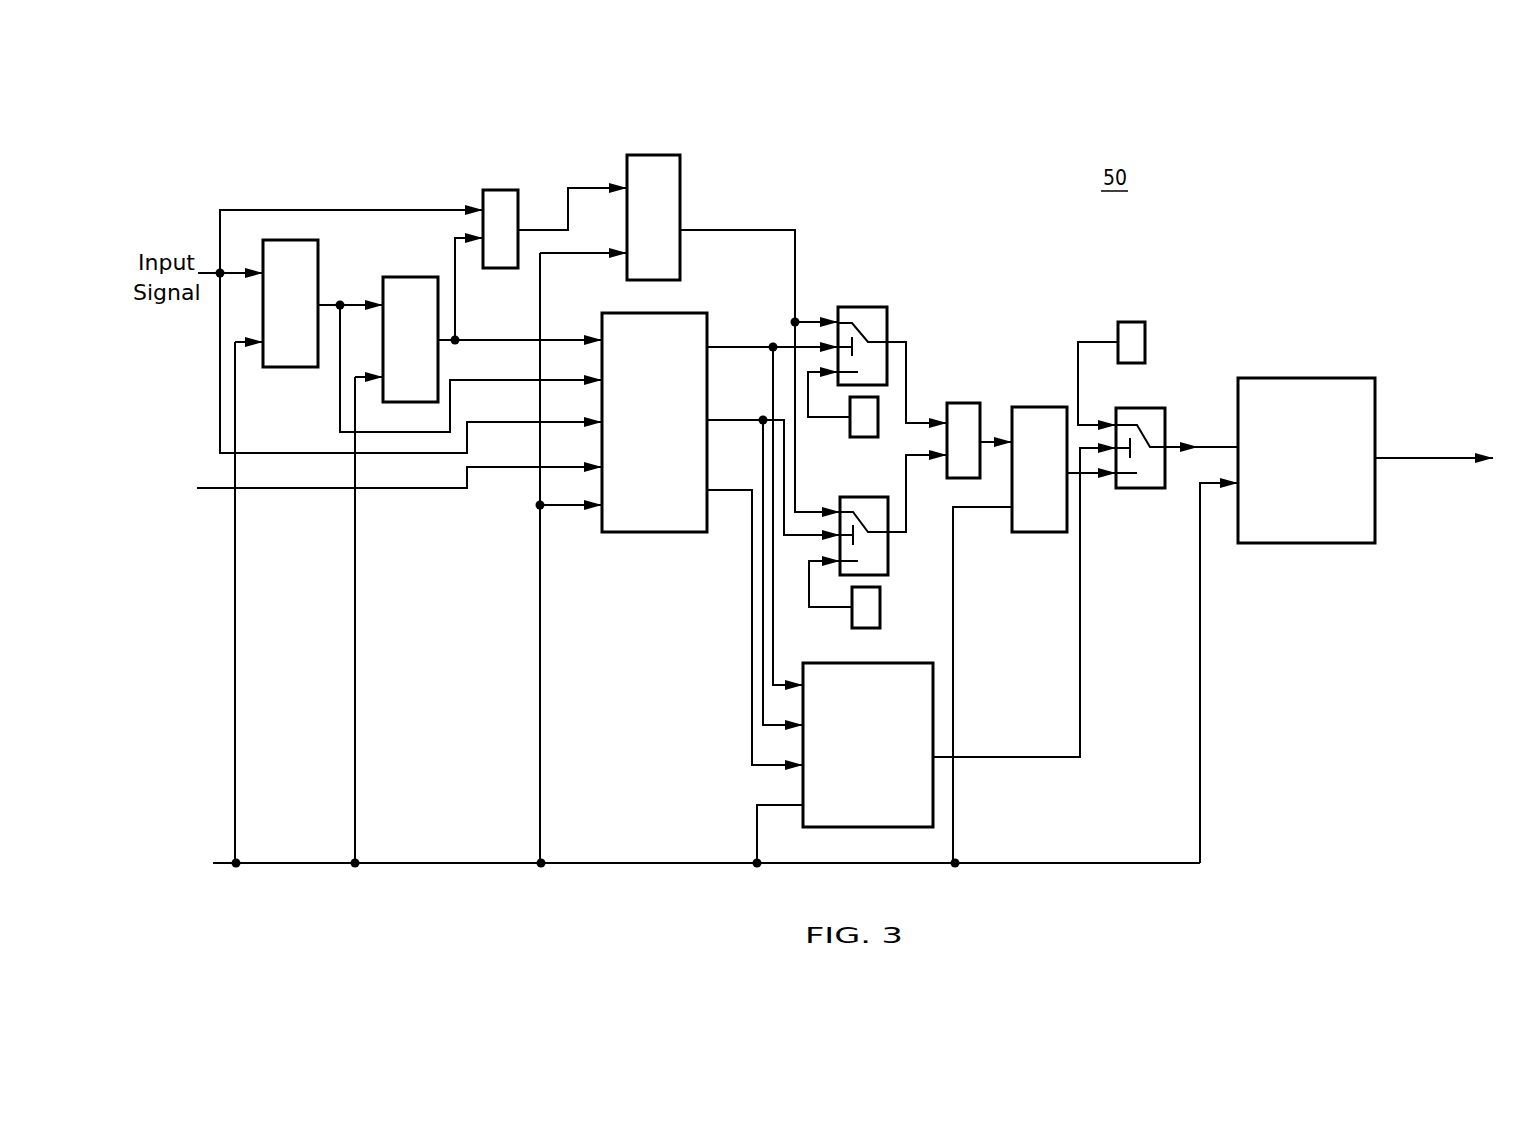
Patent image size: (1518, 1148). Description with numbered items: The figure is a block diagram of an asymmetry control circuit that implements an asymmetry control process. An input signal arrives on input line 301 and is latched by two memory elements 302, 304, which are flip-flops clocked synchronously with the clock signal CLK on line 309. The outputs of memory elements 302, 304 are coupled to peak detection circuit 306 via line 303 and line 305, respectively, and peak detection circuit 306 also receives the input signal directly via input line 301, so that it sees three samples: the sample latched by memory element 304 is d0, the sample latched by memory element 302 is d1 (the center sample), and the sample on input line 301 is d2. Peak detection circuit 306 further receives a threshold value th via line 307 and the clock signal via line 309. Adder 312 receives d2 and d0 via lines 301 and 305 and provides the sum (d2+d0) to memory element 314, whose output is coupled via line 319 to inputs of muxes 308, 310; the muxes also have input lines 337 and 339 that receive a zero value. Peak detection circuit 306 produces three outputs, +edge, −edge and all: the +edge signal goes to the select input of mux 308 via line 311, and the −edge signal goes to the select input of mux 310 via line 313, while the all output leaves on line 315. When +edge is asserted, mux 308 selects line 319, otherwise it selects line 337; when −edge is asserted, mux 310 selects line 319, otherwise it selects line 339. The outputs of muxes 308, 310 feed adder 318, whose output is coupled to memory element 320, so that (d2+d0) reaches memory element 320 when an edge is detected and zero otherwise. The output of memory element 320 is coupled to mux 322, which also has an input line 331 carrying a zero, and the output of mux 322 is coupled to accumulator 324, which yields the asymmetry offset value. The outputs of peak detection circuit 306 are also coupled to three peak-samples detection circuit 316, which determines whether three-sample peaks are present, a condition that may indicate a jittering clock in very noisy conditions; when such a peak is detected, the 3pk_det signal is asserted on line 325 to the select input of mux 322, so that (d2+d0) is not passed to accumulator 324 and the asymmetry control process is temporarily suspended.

The input line 301 is at (212, 266).
The memory element 302 is at (288, 367).
The line 303 is at (330, 300).
The memory element 304 is at (410, 277).
The line 305 is at (496, 338).
The peak detection circuit 306 is at (655, 533).
The line 307 is at (210, 490).
The mux 308 is at (860, 306).
The line 309 is at (214, 866).
The mux 310 is at (868, 496).
The line 311 is at (738, 346).
The adder 312 is at (500, 188).
The line 313 is at (737, 418).
The memory element 314 is at (652, 154).
The line 315 is at (730, 489).
The three peak-samples detection circuit 316 is at (912, 662).
The adder 318 is at (963, 402).
The line 319 is at (730, 228).
The memory element 320 is at (1037, 406).
The mux 322 is at (1140, 408).
The accumulator 324 is at (1303, 378).
The line 325 is at (1012, 756).
The input line 331 is at (1098, 342).
The input line 337 is at (830, 418).
The input line 339 is at (827, 607).